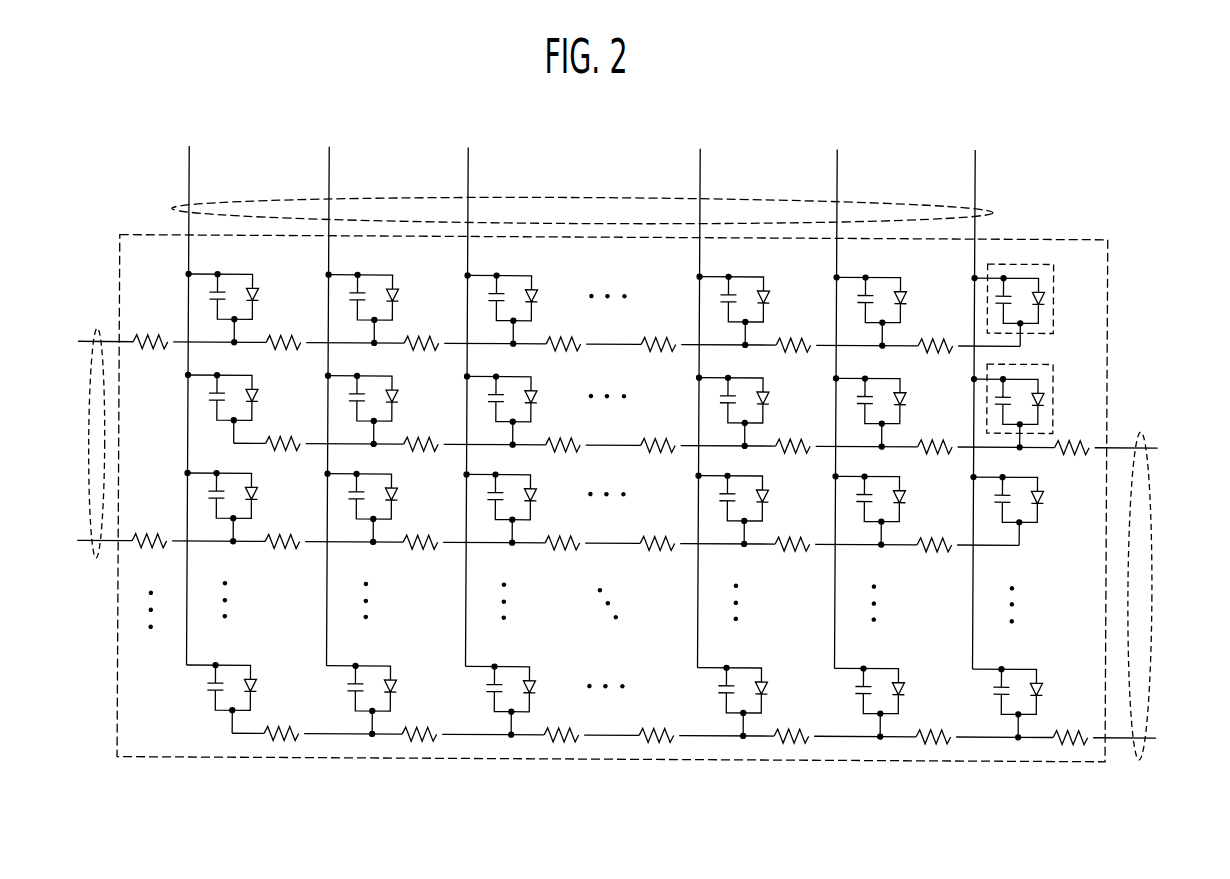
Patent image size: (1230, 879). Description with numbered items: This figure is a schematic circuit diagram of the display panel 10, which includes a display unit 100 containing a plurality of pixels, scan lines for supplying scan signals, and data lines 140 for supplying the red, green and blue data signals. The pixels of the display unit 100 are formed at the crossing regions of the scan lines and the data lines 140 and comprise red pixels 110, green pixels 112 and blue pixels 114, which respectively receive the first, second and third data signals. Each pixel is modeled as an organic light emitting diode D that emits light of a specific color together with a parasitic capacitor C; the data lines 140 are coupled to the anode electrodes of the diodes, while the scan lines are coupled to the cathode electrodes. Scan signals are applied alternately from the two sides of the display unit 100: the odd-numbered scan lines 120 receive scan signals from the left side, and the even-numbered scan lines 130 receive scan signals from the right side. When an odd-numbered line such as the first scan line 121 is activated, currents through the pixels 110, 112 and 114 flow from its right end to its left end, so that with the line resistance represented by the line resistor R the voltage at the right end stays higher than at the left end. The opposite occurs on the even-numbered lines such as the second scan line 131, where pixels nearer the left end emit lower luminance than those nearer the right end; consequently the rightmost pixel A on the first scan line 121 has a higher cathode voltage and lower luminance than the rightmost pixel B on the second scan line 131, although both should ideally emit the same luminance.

The display panel 10 is at (623, 488).
The display unit 100 is at (822, 757).
The red pixel 110 is at (241, 252).
The green pixel 112 is at (379, 252).
The blue pixel 114 is at (516, 252).
The odd-numbered scan lines 120 is at (99, 558).
The first scan line 121 is at (108, 331).
The even-numbered scan lines 130 is at (1142, 755).
The second scan line 131 is at (1124, 442).
The data lines 140 is at (995, 208).